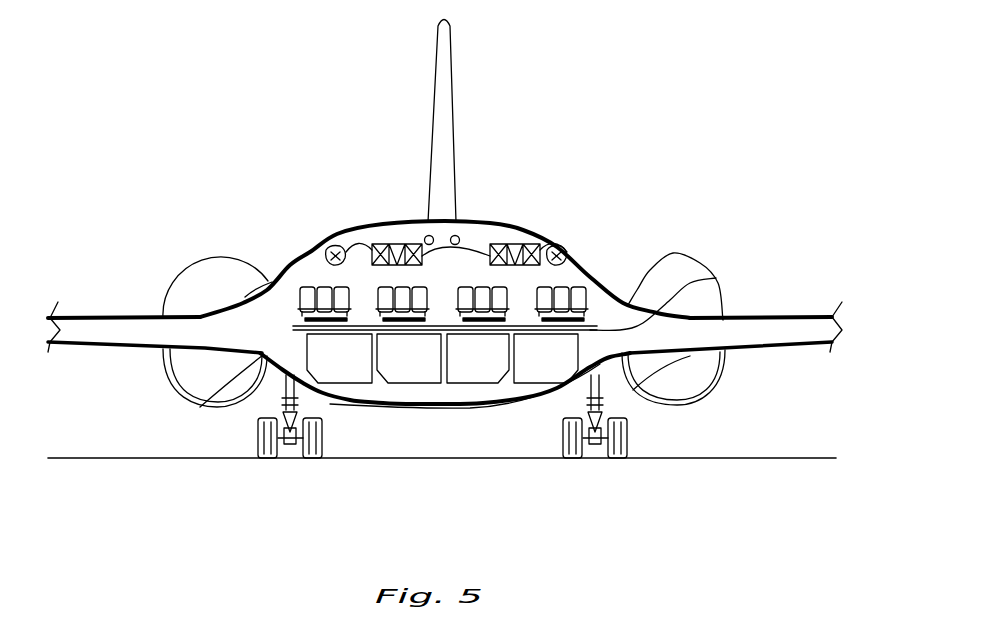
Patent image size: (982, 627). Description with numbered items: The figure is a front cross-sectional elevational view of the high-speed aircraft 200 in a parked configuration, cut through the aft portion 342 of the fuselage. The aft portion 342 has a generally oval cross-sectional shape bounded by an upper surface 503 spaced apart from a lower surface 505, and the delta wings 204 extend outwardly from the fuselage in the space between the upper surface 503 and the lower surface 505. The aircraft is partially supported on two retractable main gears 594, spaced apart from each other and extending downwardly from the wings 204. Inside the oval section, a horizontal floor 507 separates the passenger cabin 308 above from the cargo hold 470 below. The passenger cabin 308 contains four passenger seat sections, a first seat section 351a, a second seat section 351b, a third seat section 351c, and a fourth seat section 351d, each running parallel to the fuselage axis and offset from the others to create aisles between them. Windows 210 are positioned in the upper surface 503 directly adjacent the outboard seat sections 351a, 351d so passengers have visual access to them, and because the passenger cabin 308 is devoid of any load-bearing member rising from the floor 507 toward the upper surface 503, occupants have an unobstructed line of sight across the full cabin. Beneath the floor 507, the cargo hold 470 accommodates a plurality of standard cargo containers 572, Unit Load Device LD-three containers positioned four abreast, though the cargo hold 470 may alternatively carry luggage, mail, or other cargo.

The high-speed aircraft 200 is at (198, 60).
The aft portion of the fuselage 342 is at (356, 137).
The delta wings 204 is at (101, 317).
The windows 210 is at (297, 292).
The passenger cabin 308 is at (528, 258).
The upper surface of the fuselage 503 is at (490, 222).
The lower surface of the fuselage 505 is at (443, 407).
The horizontal floor 507 is at (716, 278).
The first seat section 351a is at (266, 286).
The second seat section 351b is at (206, 404).
The third seat section 351c is at (664, 397).
The fourth seat section 351d is at (640, 296).
The cargo hold 470 is at (495, 401).
The standard cargo containers 572 is at (343, 386).
The retractable main gears 594 is at (257, 443).